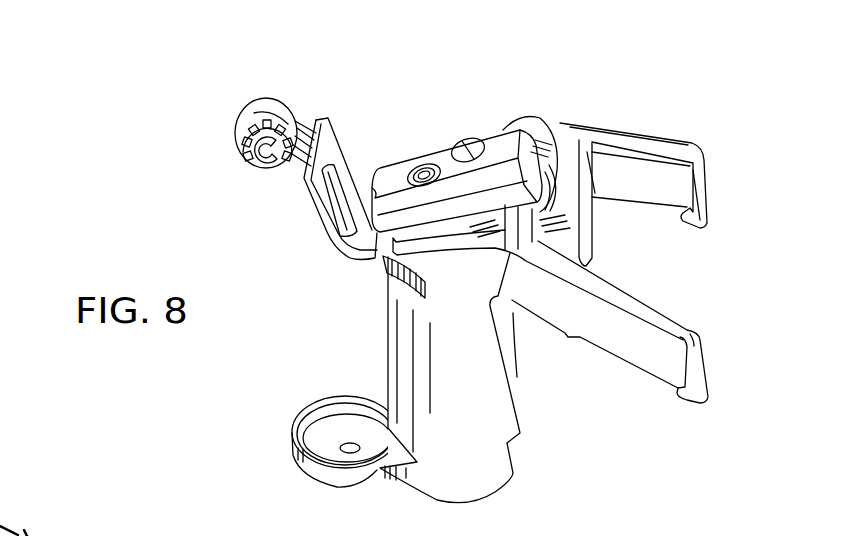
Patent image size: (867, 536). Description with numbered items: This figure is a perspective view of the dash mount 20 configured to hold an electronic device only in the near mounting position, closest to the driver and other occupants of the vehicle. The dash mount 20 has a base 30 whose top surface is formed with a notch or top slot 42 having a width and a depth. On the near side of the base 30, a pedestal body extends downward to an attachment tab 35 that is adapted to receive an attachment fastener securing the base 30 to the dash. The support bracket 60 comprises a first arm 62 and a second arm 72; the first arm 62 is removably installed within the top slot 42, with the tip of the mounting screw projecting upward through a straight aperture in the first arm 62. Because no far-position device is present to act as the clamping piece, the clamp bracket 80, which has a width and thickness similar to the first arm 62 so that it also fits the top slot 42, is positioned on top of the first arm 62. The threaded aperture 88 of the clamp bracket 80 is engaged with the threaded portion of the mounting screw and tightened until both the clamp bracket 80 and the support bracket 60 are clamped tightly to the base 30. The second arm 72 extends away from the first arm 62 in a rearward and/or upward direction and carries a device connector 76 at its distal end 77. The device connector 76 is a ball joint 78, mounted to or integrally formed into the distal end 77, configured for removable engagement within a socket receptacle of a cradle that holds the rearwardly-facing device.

The dash mount 20 is at (680, 78).
The base 30 is at (520, 407).
The attachment tab 35 is at (292, 453).
The top slot 42 is at (547, 122).
The support bracket 60 is at (318, 216).
The first arm 62 is at (383, 252).
The second arm 72 is at (343, 124).
The device connector 76 is at (246, 185).
The distal end 77 is at (246, 73).
The ball joint 78 is at (238, 129).
The clamp bracket 80 is at (493, 150).
The threaded aperture 88 is at (418, 164).